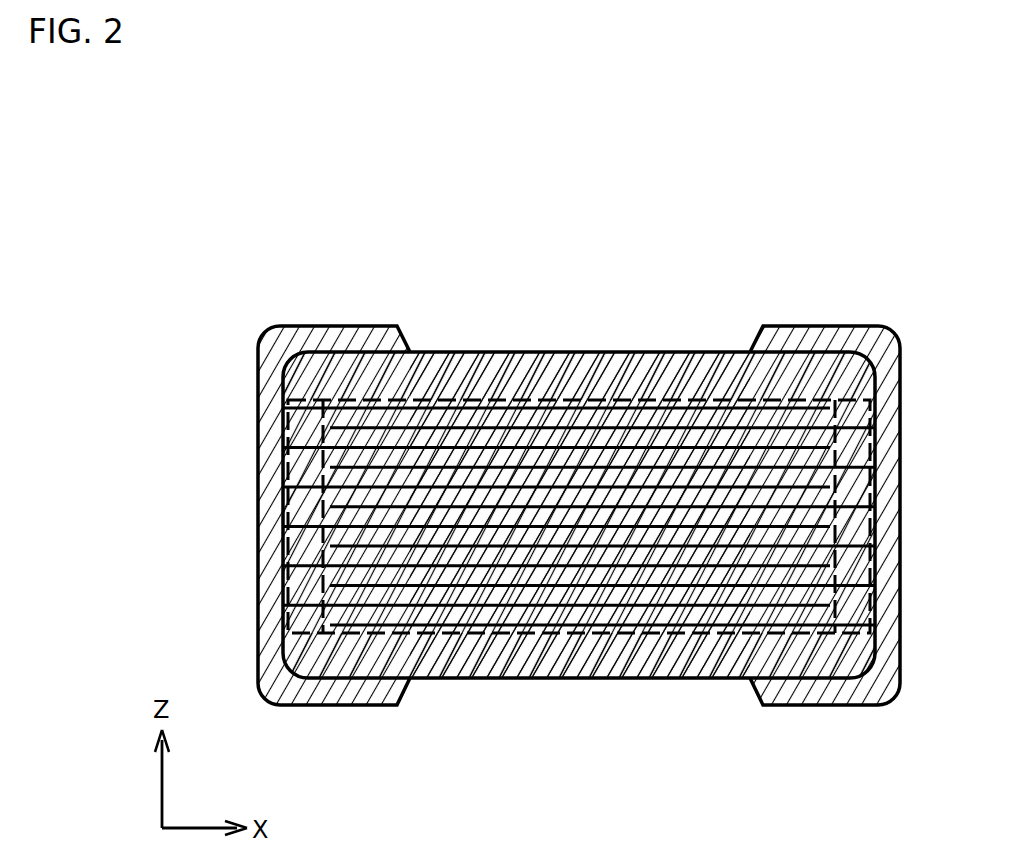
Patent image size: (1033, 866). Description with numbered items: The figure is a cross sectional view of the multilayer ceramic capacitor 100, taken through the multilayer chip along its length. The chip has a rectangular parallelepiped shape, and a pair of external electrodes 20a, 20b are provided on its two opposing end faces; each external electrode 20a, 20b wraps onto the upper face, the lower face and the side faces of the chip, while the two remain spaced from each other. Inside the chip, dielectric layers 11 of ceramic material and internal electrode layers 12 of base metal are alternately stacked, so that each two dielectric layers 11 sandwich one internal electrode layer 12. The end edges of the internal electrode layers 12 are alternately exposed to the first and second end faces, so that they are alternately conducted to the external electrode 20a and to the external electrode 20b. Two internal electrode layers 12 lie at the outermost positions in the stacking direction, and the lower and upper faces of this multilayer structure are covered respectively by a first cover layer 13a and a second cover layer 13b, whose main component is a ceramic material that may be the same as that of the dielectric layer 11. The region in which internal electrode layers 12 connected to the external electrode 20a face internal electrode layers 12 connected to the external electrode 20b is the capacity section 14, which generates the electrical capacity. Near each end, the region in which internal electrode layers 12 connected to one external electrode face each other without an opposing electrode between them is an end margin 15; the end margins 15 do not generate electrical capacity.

The multilayer ceramic capacitor 100 is at (573, 463).
The external electrode 20a is at (280, 325).
The external electrode 20b is at (865, 326).
The dielectric layer 11 is at (698, 590).
The internal electrode layer 12 is at (522, 567).
The first cover layer 13a is at (493, 648).
The second cover layer 13b is at (475, 368).
The capacity section 14 is at (603, 398).
The end margin 15 is at (308, 398).